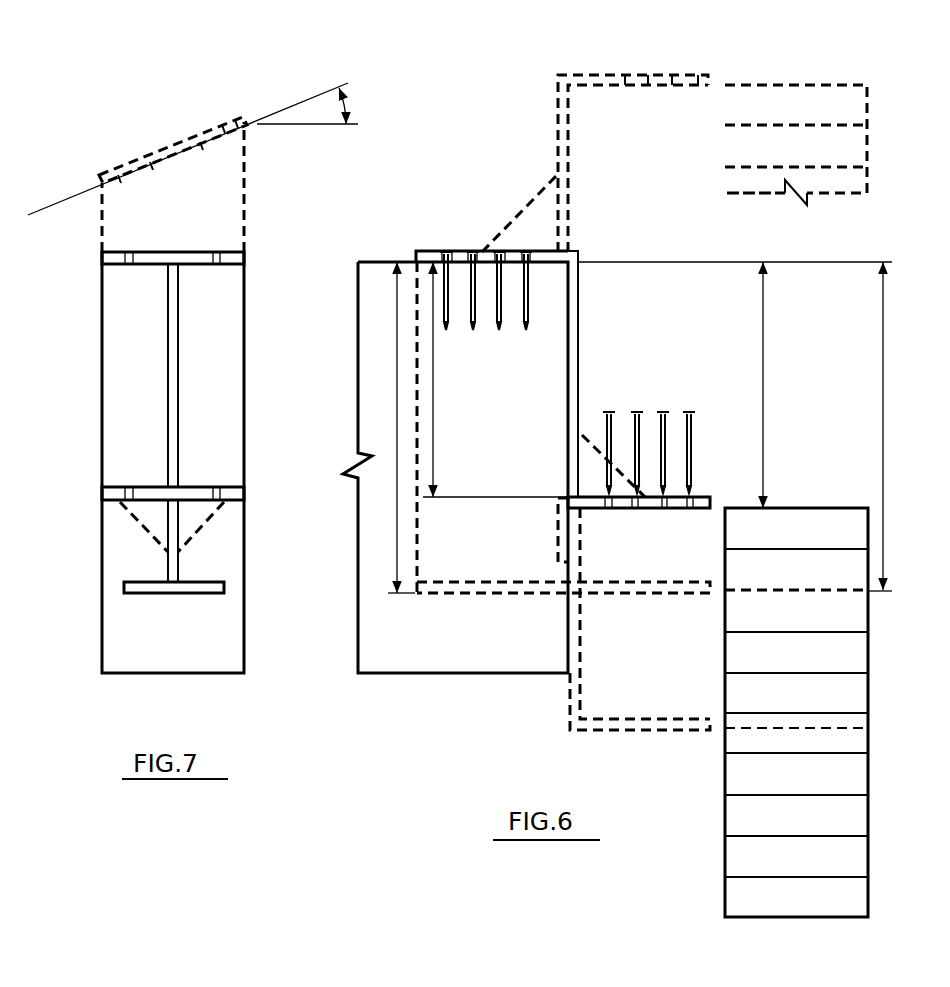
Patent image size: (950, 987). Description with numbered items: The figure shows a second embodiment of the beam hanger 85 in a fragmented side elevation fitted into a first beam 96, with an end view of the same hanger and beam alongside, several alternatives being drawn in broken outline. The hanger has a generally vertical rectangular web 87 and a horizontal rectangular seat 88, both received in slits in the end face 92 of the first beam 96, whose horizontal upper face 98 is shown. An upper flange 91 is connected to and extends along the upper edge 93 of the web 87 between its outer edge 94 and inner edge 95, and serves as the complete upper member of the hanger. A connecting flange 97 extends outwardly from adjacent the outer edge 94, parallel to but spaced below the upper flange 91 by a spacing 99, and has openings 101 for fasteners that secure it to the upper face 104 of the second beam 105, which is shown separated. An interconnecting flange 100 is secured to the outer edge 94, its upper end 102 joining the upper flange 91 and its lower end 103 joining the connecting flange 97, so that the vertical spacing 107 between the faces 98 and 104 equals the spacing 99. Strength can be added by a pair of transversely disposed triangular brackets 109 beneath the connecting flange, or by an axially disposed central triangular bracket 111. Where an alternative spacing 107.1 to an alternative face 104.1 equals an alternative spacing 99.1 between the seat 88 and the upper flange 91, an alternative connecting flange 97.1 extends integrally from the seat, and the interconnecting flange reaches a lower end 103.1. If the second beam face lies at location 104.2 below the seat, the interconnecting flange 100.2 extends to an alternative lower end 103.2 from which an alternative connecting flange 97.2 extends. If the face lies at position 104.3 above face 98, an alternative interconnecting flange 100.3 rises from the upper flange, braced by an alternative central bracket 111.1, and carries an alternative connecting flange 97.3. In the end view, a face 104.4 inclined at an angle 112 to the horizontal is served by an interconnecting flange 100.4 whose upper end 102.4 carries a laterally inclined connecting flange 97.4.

In FIG. 7, the beam hanger 85 is at (147, 370).
In FIG. 6, the beam hanger 85 is at (660, 268).
In FIG. 7, the web 87 is at (177, 397).
In FIG. 6, the web 87 is at (530, 458).
In FIG. 7, the seat 88 is at (147, 592).
In FIG. 6, the seat 88 is at (497, 594).
In FIG. 7, the upper flange 91 is at (163, 245).
In FIG. 6, the upper flange 91 is at (436, 248).
In FIG. 7, the end face 92 is at (232, 332).
In FIG. 6, the end face 92 is at (583, 647).
In FIG. 7, the upper edge 93 is at (184, 262).
In FIG. 6, the upper edge 93 is at (566, 255).
In FIG. 6, the outer edge 94 is at (577, 357).
In FIG. 6, the inner edge 95 is at (417, 262).
In FIG. 7, the first beam 96 is at (205, 676).
In FIG. 6, the first beam 96 is at (442, 676).
In FIG. 6, the connecting flange 97 is at (708, 492).
In FIG. 6, the alternative connecting flange 97.1 is at (585, 598).
In FIG. 6, the alternative connecting flange 97.2 is at (697, 730).
In FIG. 6, the alternative connecting flange 97.3 is at (620, 72).
In FIG. 7, the laterally inclined connecting flange 97.4 is at (157, 157).
In FIG. 7, the upper face 98 is at (150, 265).
In FIG. 6, the upper face 98 is at (370, 262).
In FIG. 6, the spacing 99 is at (437, 420).
In FIG. 6, the alternative spacing 99.1 is at (396, 430).
In FIG. 6, the interconnecting flange 100 is at (586, 310).
In FIG. 6, the interconnecting flange 100.2 is at (575, 700).
In FIG. 6, the alternative interconnecting flange 100.3 is at (572, 150).
In FIG. 7, the interconnecting flange 100.4 is at (187, 195).
In FIG. 6, the openings 101 is at (667, 532).
In FIG. 6, the upper end 102 is at (578, 252).
In FIG. 7, the upper end 102.4 is at (231, 121).
In FIG. 6, the lower end 103 is at (585, 497).
In FIG. 6, the lower end 103.1 is at (580, 582).
In FIG. 6, the alternative lower end 103.2 is at (572, 730).
In FIG. 6, the upper face 104 is at (770, 508).
In FIG. 6, the upper face 104.1 is at (757, 591).
In FIG. 6, the alternative location 104.2 is at (752, 729).
In FIG. 6, the alternative position 104.3 is at (745, 86).
In FIG. 7, the face 104.4 is at (262, 116).
In FIG. 6, the second beam 105 is at (867, 145).
In FIG. 6, the vertical spacing 107 is at (763, 415).
In FIG. 6, the alternative spacing 107.1 is at (883, 415).
In FIG. 7, the strengthening triangular brackets 109 is at (150, 516).
In FIG. 6, the strengthening triangular brackets 109 is at (560, 528).
In FIG. 6, the central triangular bracket 111 is at (588, 428).
In FIG. 6, the alternative central bracket 111.1 is at (544, 188).
In FIG. 7, the angle 112 is at (347, 104).